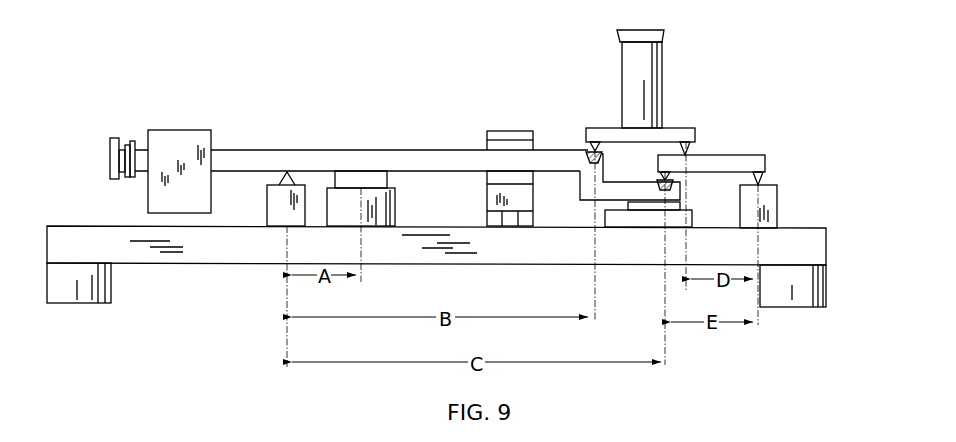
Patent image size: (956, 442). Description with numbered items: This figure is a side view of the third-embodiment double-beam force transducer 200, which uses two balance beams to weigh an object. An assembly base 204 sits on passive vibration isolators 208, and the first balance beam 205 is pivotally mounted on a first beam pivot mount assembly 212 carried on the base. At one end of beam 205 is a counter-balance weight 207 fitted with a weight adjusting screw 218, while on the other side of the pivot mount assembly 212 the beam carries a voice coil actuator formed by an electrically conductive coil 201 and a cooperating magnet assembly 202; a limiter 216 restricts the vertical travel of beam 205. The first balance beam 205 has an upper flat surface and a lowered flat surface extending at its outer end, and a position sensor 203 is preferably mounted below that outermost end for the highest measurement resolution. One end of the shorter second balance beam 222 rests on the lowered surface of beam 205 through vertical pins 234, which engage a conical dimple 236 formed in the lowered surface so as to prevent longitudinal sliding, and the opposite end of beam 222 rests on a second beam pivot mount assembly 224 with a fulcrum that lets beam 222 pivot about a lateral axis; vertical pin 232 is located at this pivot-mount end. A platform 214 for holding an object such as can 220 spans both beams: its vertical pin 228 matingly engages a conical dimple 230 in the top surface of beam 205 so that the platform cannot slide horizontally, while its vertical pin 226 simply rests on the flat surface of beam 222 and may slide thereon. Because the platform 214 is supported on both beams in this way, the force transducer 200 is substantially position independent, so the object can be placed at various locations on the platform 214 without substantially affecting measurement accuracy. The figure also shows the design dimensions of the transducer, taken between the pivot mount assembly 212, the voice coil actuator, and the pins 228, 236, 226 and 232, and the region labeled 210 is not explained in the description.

The double-beam force transducer 200 is at (399, 48).
The electrically conductive coil 201 is at (396, 206).
The magnet assembly 202 is at (388, 180).
The position sensor 203 is at (633, 223).
The assembly base 204 is at (98, 238).
The first balance beam 205 is at (302, 148).
The counter-balance weight 207 is at (175, 130).
The passive vibration isolators 208 is at (112, 282).
The stage plate 210 is at (694, 225).
The first beam pivot mount assembly 212 is at (265, 208).
The platform 214 is at (672, 127).
The limiter 216 is at (517, 128).
The weight adjusting screw 218 is at (113, 138).
The can 220 is at (621, 56).
The second balance beam 222 is at (745, 155).
The second beam pivot mount assembly 224 is at (777, 198).
The vertical pin 226 is at (689, 149).
The vertical pin 228 is at (590, 150).
The conical dimple 230 is at (601, 152).
The vertical pin 232 is at (766, 176).
The vertical pins 234 is at (660, 176).
The conical dimple 236 is at (668, 178).